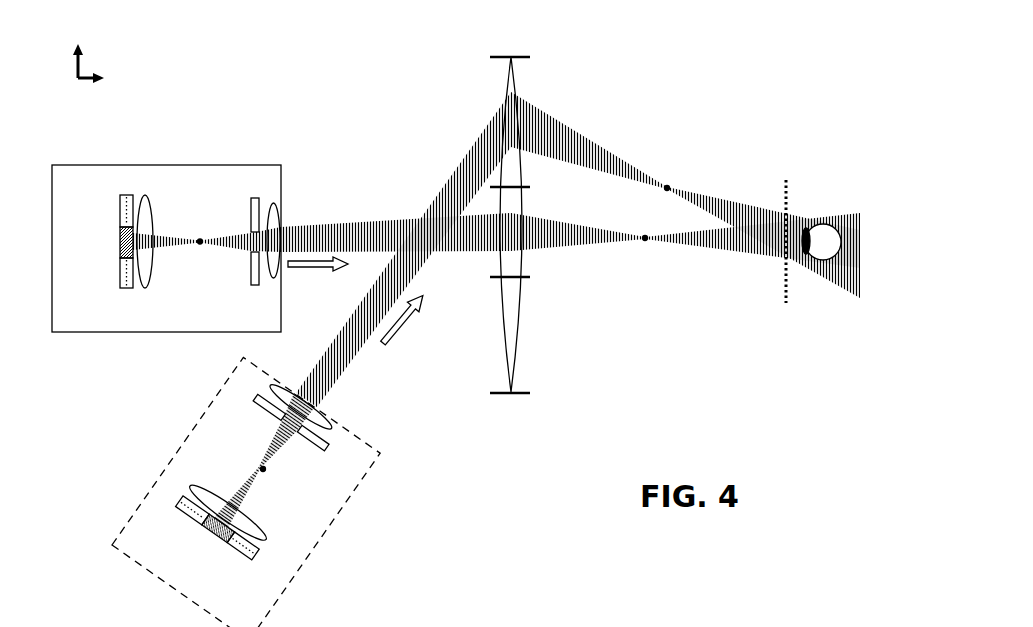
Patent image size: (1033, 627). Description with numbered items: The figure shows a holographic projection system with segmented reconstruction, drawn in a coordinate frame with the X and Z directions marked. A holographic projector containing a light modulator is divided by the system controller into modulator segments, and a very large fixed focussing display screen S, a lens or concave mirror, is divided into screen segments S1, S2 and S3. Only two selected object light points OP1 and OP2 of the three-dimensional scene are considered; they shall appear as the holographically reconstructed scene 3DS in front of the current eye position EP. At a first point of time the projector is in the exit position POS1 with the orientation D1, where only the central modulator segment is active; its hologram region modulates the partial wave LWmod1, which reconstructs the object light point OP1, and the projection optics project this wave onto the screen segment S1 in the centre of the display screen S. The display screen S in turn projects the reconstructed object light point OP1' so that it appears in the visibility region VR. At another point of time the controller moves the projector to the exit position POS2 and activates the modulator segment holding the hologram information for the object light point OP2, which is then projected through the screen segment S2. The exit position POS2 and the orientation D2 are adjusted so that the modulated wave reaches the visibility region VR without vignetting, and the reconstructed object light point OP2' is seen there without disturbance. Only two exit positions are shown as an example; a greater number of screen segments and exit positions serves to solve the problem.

The x axis X is at (70, 56).
The z axis Z is at (99, 76).
The exit position POS1 is at (171, 232).
The exit position POS2 is at (263, 492).
The object light point OP1 is at (200, 268).
The object light point OP2 is at (238, 462).
The orientation D1 is at (318, 283).
The orientation D2 is at (410, 327).
The modulated partial wave LWmod1 is at (463, 218).
The holographically reconstructed scene 3DS is at (589, 140).
The display screen S is at (494, 232).
The screen segment S1 is at (524, 265).
The screen segment S2 is at (524, 177).
The lens section 3 S3 is at (524, 380).
The reconstructed object light point OP1' is at (697, 173).
The reconstructed object light point OP2' is at (663, 271).
The visibility region VR is at (805, 240).
The eye position EP is at (797, 242).